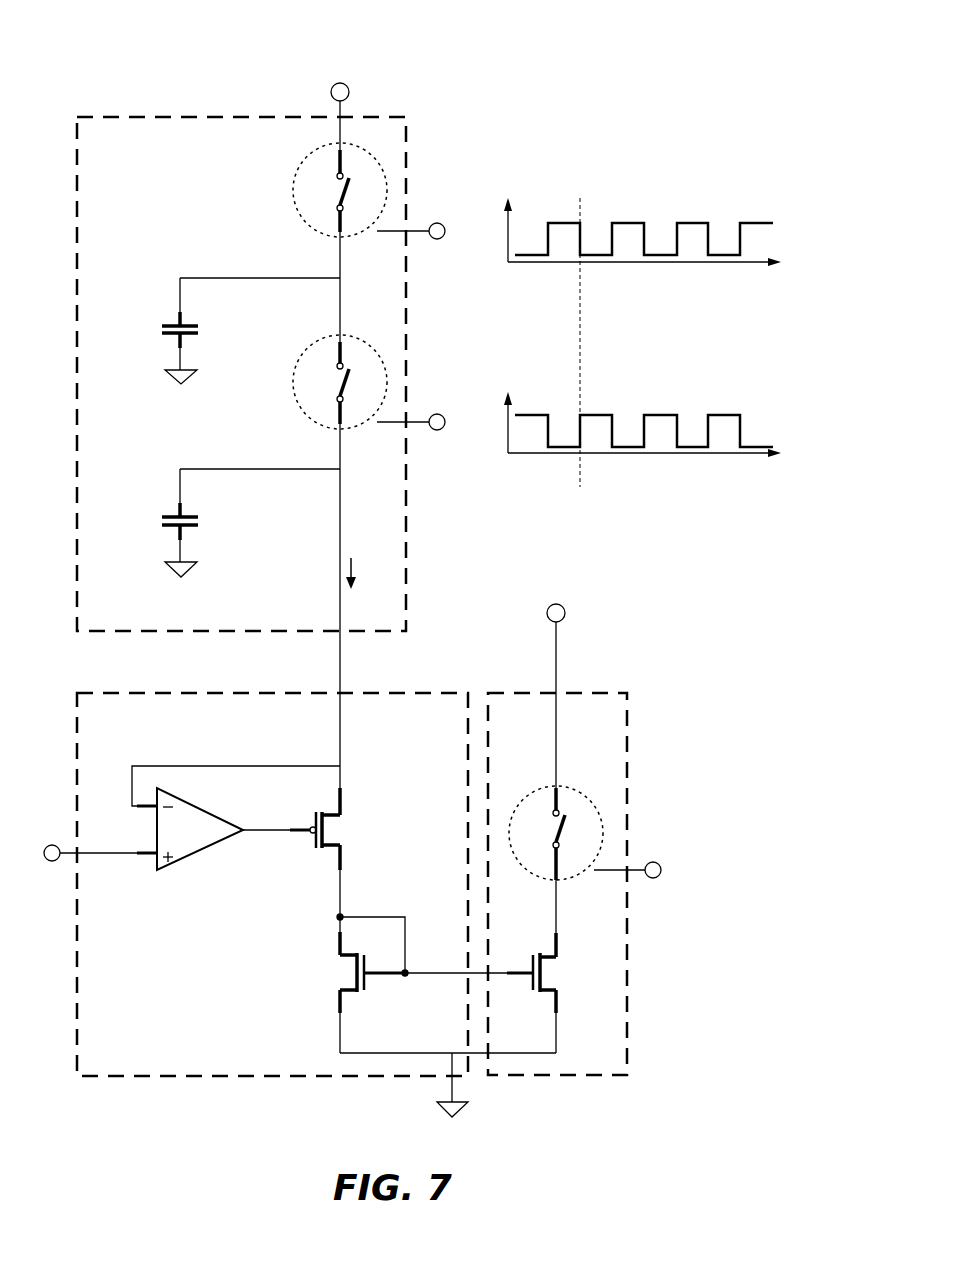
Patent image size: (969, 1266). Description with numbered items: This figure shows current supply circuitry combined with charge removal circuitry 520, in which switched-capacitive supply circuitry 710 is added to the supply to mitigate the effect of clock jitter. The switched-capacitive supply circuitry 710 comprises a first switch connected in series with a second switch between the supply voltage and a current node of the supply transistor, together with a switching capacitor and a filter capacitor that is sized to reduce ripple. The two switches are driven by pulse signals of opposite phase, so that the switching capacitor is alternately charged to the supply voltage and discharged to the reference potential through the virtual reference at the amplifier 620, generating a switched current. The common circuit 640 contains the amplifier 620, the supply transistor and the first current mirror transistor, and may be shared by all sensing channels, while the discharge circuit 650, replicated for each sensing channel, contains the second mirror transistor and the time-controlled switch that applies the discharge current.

The charge removal circuitry 520 is at (74, 47).
The switched-capacitive supply circuitry 710 is at (113, 134).
The common circuit 640 is at (113, 721).
The discharge circuit 650 is at (525, 721).
The amplifier 620 is at (199, 837).